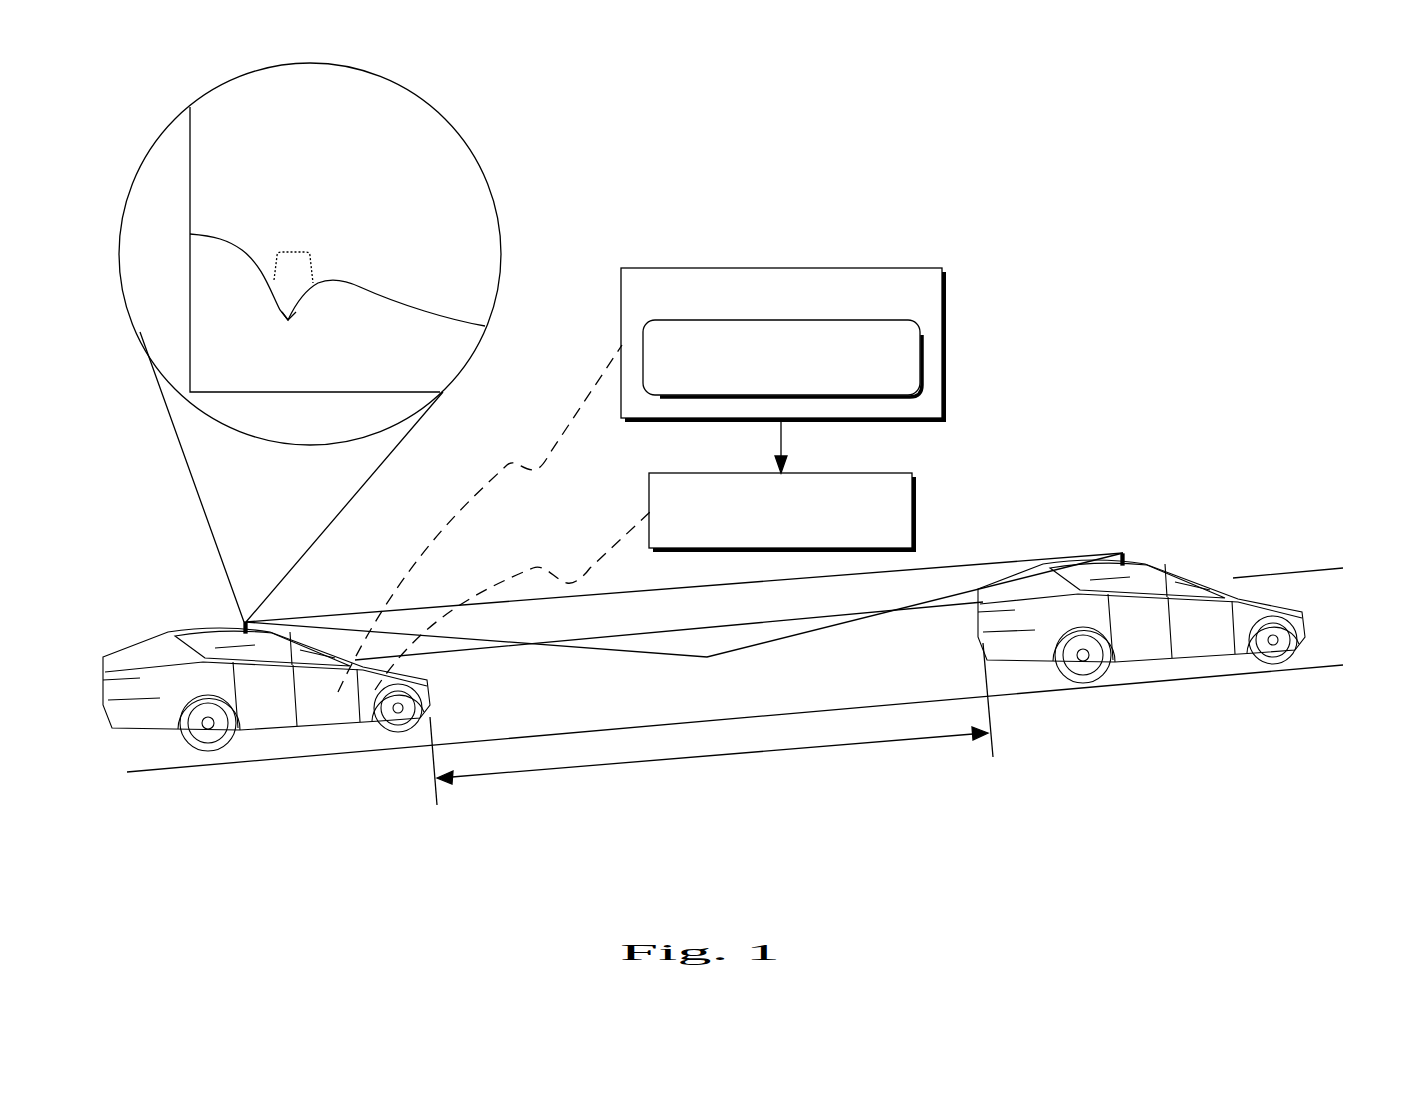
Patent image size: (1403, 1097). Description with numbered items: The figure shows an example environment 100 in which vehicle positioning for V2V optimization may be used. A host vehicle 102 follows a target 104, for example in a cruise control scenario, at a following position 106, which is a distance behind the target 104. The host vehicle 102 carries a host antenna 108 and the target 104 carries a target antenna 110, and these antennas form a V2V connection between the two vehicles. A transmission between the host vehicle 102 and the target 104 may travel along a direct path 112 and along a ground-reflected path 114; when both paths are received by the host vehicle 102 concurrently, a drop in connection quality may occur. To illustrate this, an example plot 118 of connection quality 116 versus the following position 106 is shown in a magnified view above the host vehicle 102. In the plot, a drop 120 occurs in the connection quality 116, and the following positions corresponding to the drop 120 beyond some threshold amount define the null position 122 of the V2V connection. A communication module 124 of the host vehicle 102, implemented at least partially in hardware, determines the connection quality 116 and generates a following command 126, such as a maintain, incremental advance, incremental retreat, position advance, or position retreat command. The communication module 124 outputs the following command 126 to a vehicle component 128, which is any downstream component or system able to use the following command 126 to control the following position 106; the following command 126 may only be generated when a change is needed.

The example environment 100 is at (1325, 93).
The host vehicle 102 is at (253, 733).
The target 104 is at (1220, 653).
The following position 106 is at (713, 757).
The host antenna 108 is at (243, 622).
The target antenna 110 is at (1123, 553).
The direct path 112 is at (958, 565).
The ground-reflected path 114 is at (757, 644).
The connection quality 116 is at (337, 248).
The example plot 118 is at (458, 131).
The drop 120 is at (288, 320).
The null position 122 is at (291, 252).
The communication module 124 is at (922, 302).
The following command 126 is at (907, 369).
The vehicle component 128 is at (898, 522).